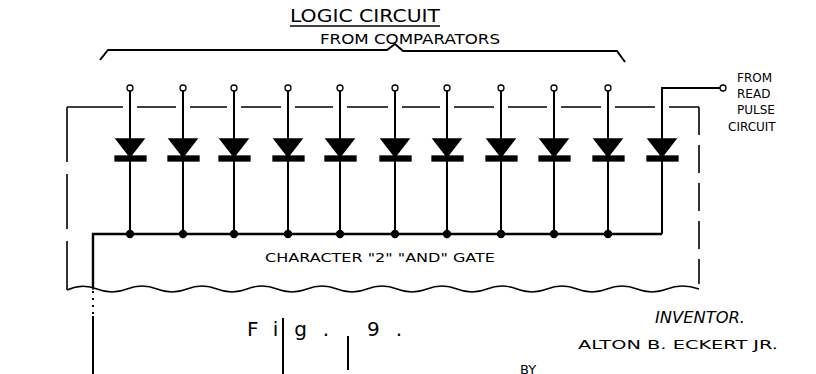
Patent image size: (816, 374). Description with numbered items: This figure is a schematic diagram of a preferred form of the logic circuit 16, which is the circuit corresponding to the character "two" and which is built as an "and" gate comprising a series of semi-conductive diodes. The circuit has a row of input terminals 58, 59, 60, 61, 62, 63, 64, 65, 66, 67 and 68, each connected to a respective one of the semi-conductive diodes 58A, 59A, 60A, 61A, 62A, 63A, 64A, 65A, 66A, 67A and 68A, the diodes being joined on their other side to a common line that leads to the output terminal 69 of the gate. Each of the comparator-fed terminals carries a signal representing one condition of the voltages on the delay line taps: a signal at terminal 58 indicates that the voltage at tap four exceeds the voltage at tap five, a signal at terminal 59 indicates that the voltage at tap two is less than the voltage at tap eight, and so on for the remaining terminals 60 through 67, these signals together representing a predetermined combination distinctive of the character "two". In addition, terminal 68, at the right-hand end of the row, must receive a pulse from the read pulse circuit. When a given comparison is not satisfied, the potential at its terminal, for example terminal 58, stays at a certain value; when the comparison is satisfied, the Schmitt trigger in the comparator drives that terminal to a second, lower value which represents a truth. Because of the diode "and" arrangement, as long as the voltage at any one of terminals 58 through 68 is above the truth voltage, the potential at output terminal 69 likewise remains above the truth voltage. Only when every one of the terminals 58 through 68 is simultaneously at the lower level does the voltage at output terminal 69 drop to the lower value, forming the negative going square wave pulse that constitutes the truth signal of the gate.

The logic circuit 16 is at (685, 242).
The output terminal 69 is at (100, 373).
The input terminal 68 is at (720, 85).
The input terminal 58 is at (126, 89).
The input terminal 59 is at (179, 89).
The input terminal 60 is at (230, 89).
The input terminal 61 is at (284, 89).
The input terminal 62 is at (336, 89).
The input terminal 63 is at (391, 89).
The input terminal 64 is at (443, 89).
The input terminal 65 is at (497, 89).
The input terminal 66 is at (550, 89).
The input terminal 67 is at (604, 89).
The semi-conductive diode 58A is at (117, 141).
The semi-conductive diode 59A is at (170, 141).
The semi-conductive diode 60A is at (221, 141).
The semi-conductive diode 61A is at (275, 141).
The semi-conductive diode 62A is at (327, 141).
The semi-conductive diode 63A is at (382, 141).
The semi-conductive diode 64A is at (434, 141).
The semi-conductive diode 65A is at (488, 141).
The semi-conductive diode 66A is at (541, 141).
The semi-conductive diode 67A is at (595, 141).
The semi-conductive diode 68A is at (649, 141).